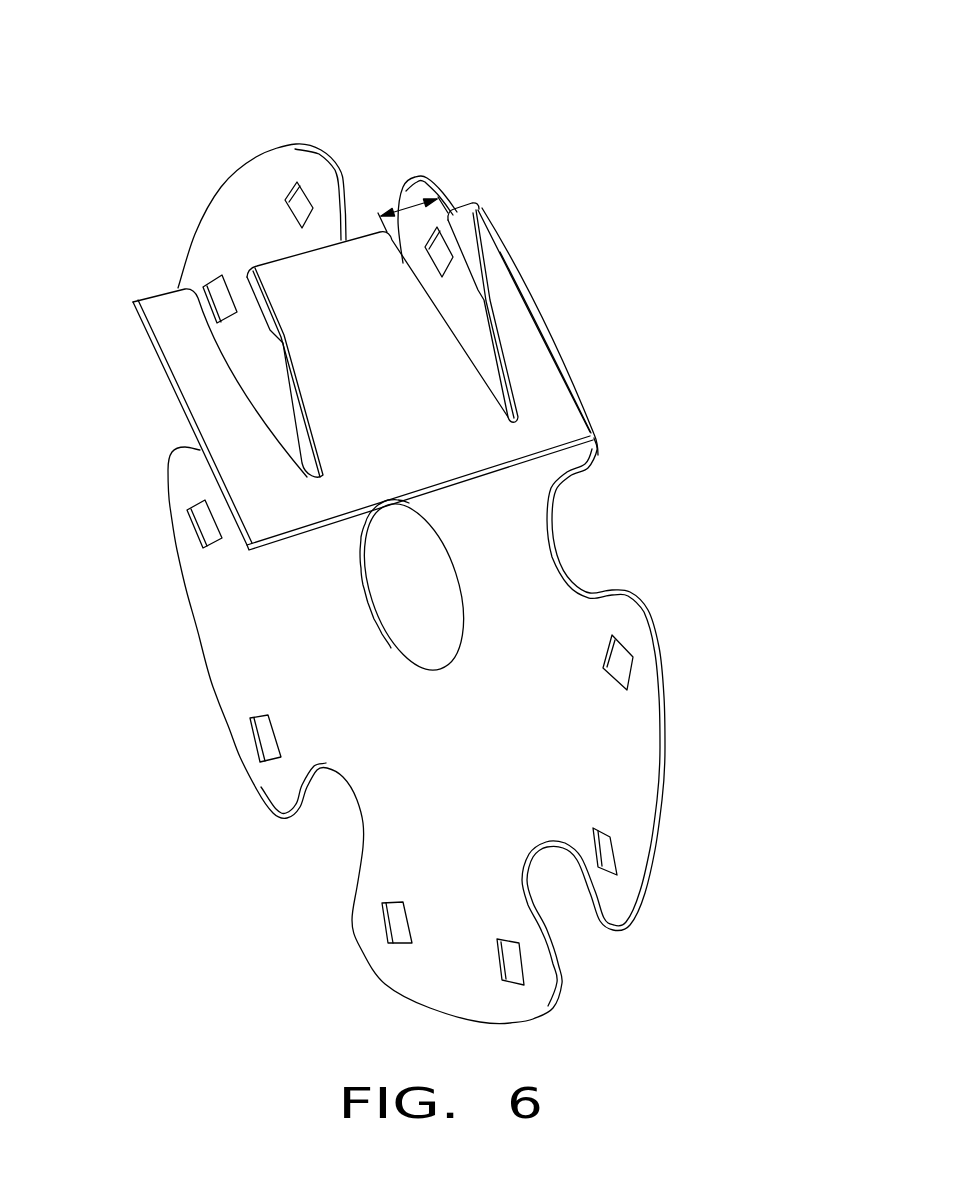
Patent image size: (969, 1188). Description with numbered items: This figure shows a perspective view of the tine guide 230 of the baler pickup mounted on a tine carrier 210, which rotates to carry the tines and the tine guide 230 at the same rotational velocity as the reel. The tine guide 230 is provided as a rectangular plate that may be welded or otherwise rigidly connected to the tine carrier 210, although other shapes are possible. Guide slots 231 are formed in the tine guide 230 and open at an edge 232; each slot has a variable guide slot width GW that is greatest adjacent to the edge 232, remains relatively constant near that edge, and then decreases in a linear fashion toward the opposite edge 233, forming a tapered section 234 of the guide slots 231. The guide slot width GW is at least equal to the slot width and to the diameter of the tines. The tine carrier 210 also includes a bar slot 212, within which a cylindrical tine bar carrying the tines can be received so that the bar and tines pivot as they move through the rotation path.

The tine carrier 210 is at (257, 682).
The bar slot 212 is at (344, 185).
The tine guide 230 is at (327, 320).
The guide slots 231 is at (442, 350).
The edge 232 is at (148, 305).
The opposite edge 233 is at (506, 463).
The tapered section 234 is at (473, 380).
The guide slot width GW is at (410, 207).